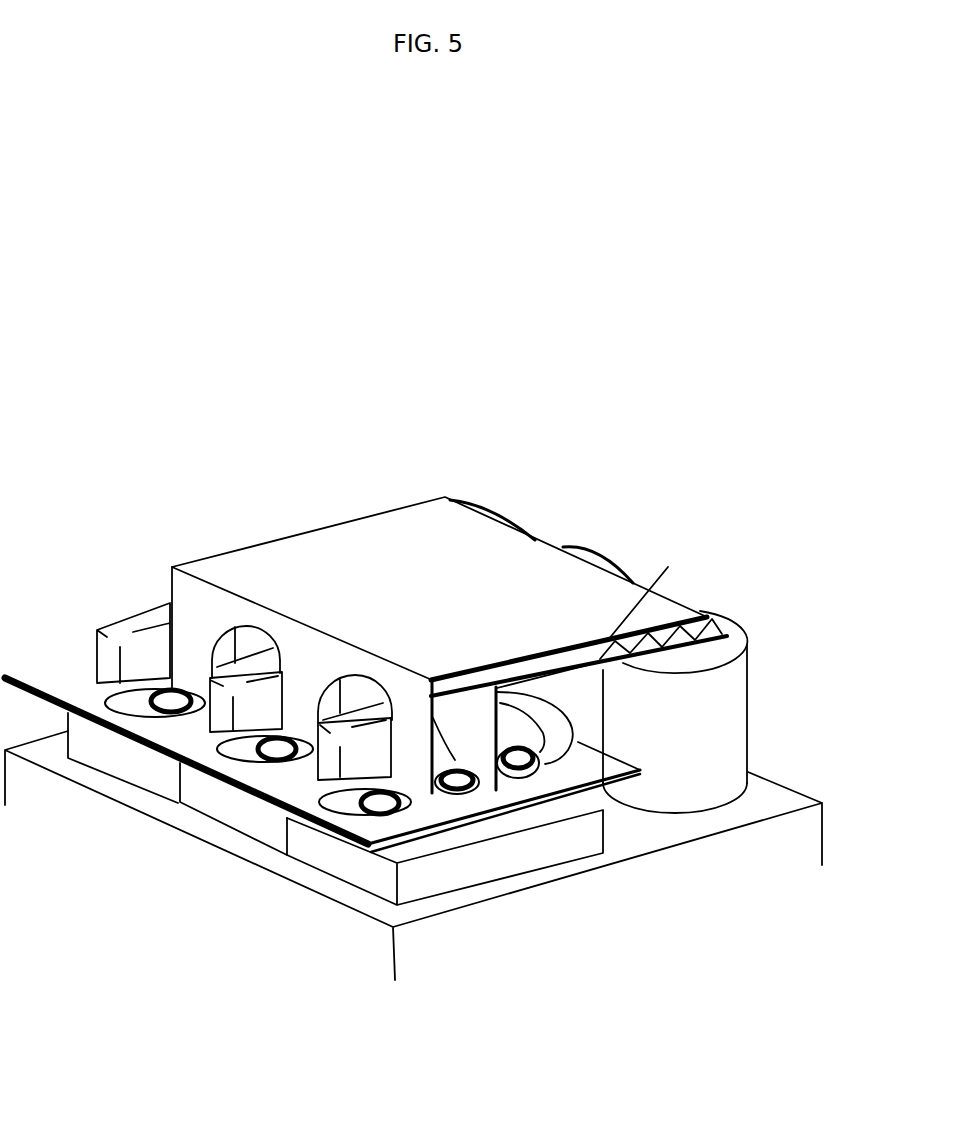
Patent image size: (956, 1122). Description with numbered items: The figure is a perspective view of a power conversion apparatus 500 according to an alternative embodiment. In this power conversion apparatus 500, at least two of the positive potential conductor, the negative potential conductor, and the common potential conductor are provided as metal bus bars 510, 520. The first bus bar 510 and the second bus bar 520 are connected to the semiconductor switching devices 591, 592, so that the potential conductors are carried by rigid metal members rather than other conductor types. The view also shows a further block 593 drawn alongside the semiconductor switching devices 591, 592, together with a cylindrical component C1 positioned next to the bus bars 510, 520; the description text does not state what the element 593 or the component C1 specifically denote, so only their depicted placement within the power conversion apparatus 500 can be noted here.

The power conversion apparatus 500 is at (807, 503).
The bus bar 510 is at (673, 581).
The bus bar 520 is at (603, 677).
The capacitor C1 is at (723, 706).
The semiconductor switching device 591 is at (350, 862).
The semiconductor switching device 592 is at (233, 806).
The third bus bar 593 is at (115, 752).